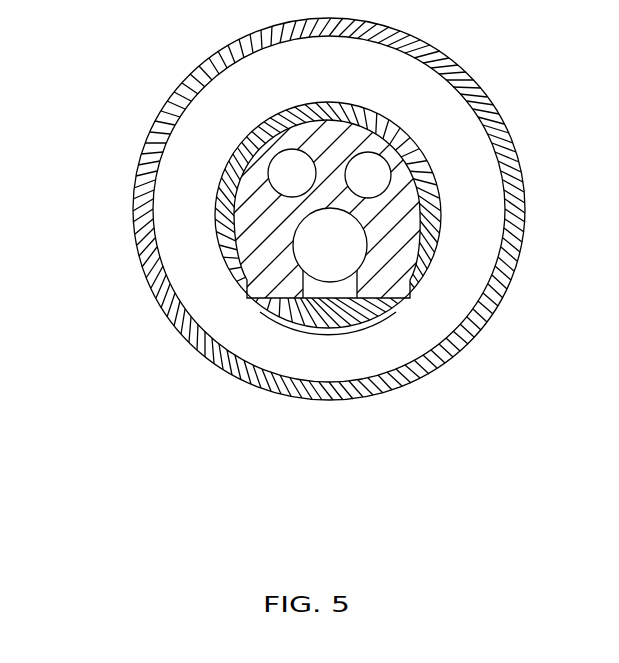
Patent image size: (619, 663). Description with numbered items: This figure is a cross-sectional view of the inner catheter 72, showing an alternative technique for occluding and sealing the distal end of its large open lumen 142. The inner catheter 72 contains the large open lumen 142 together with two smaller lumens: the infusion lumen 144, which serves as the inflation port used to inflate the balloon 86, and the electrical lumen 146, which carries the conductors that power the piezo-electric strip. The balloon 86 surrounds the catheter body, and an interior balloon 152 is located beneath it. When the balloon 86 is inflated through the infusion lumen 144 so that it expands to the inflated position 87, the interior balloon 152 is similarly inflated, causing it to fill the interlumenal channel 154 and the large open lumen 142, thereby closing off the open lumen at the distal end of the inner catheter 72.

The inner catheter 72 is at (415, 193).
The balloon 86 is at (438, 235).
The inflated position of balloon 87 is at (505, 296).
The large open lumen 142 is at (292, 253).
The infusion lumen 144 is at (381, 169).
The electrical lumen 146 is at (285, 165).
The interior balloon 152 is at (348, 308).
The interlumenal channel 154 is at (313, 292).